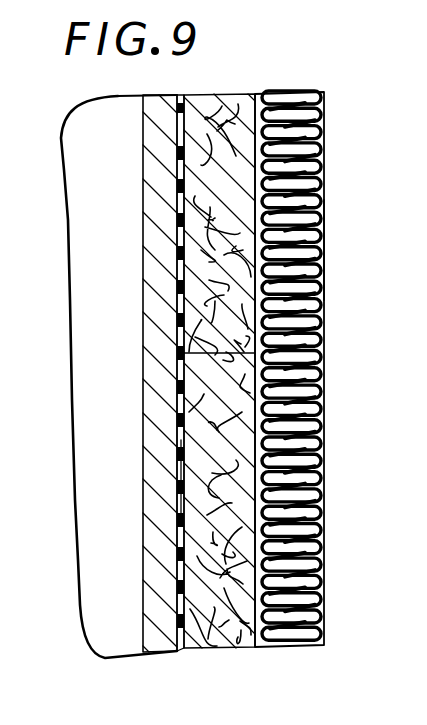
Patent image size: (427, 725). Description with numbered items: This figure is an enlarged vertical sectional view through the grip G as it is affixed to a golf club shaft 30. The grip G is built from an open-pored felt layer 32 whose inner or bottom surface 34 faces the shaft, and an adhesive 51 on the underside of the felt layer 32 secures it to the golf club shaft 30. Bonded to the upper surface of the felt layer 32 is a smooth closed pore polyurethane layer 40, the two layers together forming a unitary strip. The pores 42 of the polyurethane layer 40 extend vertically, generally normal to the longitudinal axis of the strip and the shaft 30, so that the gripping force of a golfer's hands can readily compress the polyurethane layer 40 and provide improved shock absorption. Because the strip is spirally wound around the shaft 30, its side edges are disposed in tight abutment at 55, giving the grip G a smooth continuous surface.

The golf club shaft 30 is at (146, 564).
The inner or bottom surface 34 is at (188, 602).
The open-pored felt layer 32 is at (224, 642).
The closed pore polyurethane layer 40 is at (316, 369).
The pores 42 is at (322, 390).
The tight abutment 55 is at (282, 336).
The grip G is at (326, 250).
The adhesive 51 is at (186, 488).